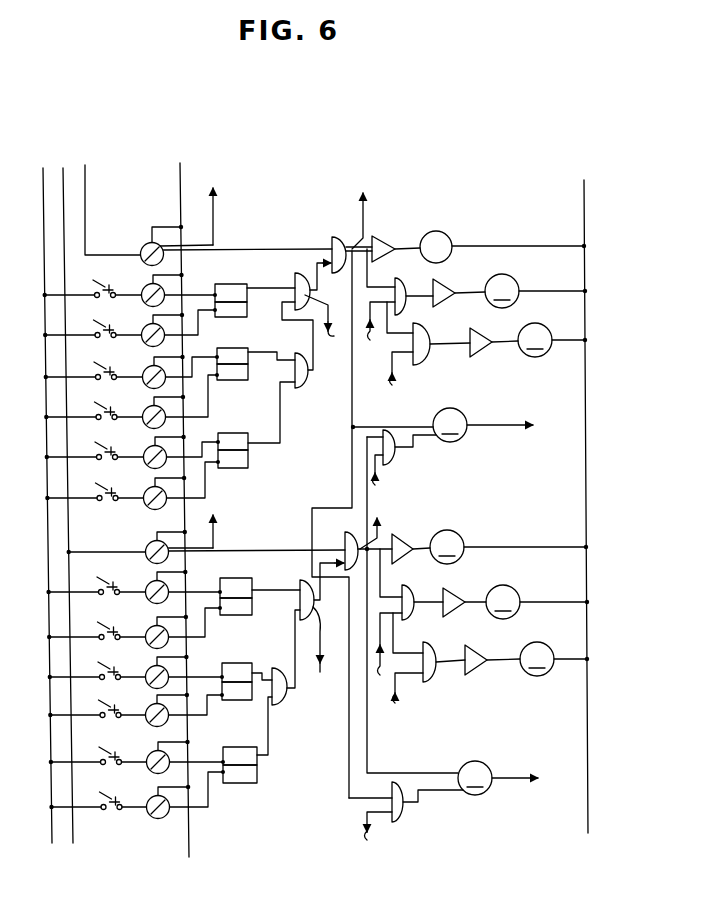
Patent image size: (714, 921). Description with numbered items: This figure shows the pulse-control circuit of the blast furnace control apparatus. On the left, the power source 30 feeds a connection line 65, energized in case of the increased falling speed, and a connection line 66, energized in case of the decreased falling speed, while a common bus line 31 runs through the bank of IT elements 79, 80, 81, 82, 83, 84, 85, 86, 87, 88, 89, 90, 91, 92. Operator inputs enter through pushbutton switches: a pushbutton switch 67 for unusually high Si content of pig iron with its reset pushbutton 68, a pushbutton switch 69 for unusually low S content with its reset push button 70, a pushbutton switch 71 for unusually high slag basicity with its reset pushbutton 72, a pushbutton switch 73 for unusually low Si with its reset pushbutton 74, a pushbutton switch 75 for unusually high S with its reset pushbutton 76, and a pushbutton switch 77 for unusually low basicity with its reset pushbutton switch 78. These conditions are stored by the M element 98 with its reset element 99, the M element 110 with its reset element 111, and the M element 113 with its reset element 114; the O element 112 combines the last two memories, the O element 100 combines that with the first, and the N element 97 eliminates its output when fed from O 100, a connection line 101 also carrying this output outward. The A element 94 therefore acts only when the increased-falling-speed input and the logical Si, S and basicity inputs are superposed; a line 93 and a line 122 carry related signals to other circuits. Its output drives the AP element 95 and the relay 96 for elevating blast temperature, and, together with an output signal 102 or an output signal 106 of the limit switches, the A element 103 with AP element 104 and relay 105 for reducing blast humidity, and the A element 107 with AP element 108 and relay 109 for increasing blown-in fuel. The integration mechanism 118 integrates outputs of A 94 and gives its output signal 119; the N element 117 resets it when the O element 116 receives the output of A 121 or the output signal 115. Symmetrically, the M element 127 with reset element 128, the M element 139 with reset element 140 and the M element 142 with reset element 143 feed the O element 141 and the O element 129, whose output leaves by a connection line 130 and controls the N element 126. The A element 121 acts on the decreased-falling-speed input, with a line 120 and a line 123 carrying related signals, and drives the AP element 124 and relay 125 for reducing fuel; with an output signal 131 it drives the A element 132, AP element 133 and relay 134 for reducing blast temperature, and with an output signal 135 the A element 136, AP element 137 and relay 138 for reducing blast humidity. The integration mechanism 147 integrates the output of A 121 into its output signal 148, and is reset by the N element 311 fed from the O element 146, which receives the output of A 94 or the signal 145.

The power source 30 is at (43, 168).
The connection line 66 is at (64, 167).
The connection line 65 is at (86, 169).
The common bus line 31 is at (181, 168).
The pushbutton switch 67 is at (79, 280).
The reset pushbutton 68 is at (79, 320).
The pushbutton switch 69 is at (80, 362).
The reset push button 70 is at (80, 402).
The pushbutton switch 71 is at (81, 443).
The reset pushbutton 72 is at (81, 485).
The pushbutton switch 73 is at (82, 581).
The reset pushbutton 74 is at (83, 625).
The pushbutton switch 75 is at (84, 665).
The reset pushbutton 76 is at (84, 704).
The pushbutton switch 77 is at (85, 750).
The reset pushbutton switch 78 is at (85, 795).
The IT element 79 is at (146, 246).
The IT element 80 is at (147, 286).
The IT element 81 is at (147, 326).
The IT element 82 is at (148, 368).
The IT element 83 is at (148, 408).
The IT element 84 is at (149, 448).
The IT element 85 is at (150, 489).
The IT element 86 is at (150, 544).
The IT element 87 is at (151, 583).
The IT element 88 is at (151, 627).
The IT element 89 is at (151, 668).
The IT element 90 is at (151, 706).
The IT element 91 is at (152, 753).
The IT element 92 is at (152, 798).
The line 93 is at (215, 212).
The A element 94 is at (345, 231).
The AP element 95 is at (378, 238).
The relay 96 is at (443, 235).
The N element 97 is at (325, 280).
The M element 98 is at (219, 284).
The reset element 99 is at (229, 309).
The O element 100 is at (290, 280).
The connection line 101 is at (328, 326).
The output signal 102 is at (384, 331).
The A element 103 is at (397, 284).
The AP element 104 is at (441, 288).
The relay 105 is at (536, 291).
The output signal 106 is at (396, 381).
The A element 107 is at (425, 325).
The AP element 108 is at (474, 335).
The relay 109 is at (552, 340).
The M element 110 is at (243, 348).
The reset element 111 is at (240, 373).
The O element 112 is at (304, 380).
The M element 113 is at (233, 433).
The reset element 114 is at (236, 467).
The output signal 115 is at (379, 483).
The O element 116 is at (396, 455).
The N element 117 is at (418, 433).
The integration mechanism 118 is at (410, 425).
The output signal 119 is at (502, 423).
The line 120 is at (223, 519).
The A element 121 is at (343, 539).
The line 122 is at (365, 204).
The line 123 is at (380, 527).
The AP element 124 is at (410, 546).
The relay 125 is at (509, 547).
The N element 126 is at (318, 561).
The M element 127 is at (240, 575).
The reset element 128 is at (226, 610).
The O element 129 is at (299, 602).
The connection line 130 is at (333, 639).
The output signal 131 is at (381, 674).
The A element 132 is at (404, 586).
The AP element 133 is at (450, 590).
The relay 134 is at (537, 602).
The output signal 135 is at (396, 699).
The A element 136 is at (431, 650).
The AP element 137 is at (476, 677).
The relay 138 is at (554, 659).
The M element 139 is at (236, 666).
The reset element 140 is at (226, 697).
The O element 141 is at (289, 699).
The M element 142 is at (228, 750).
The reset element 143 is at (238, 778).
The signal 145 is at (369, 836).
The O element 146 is at (397, 812).
The integration mechanism 147 is at (475, 778).
The output signal 148 is at (517, 776).
The N element 311 is at (436, 786).